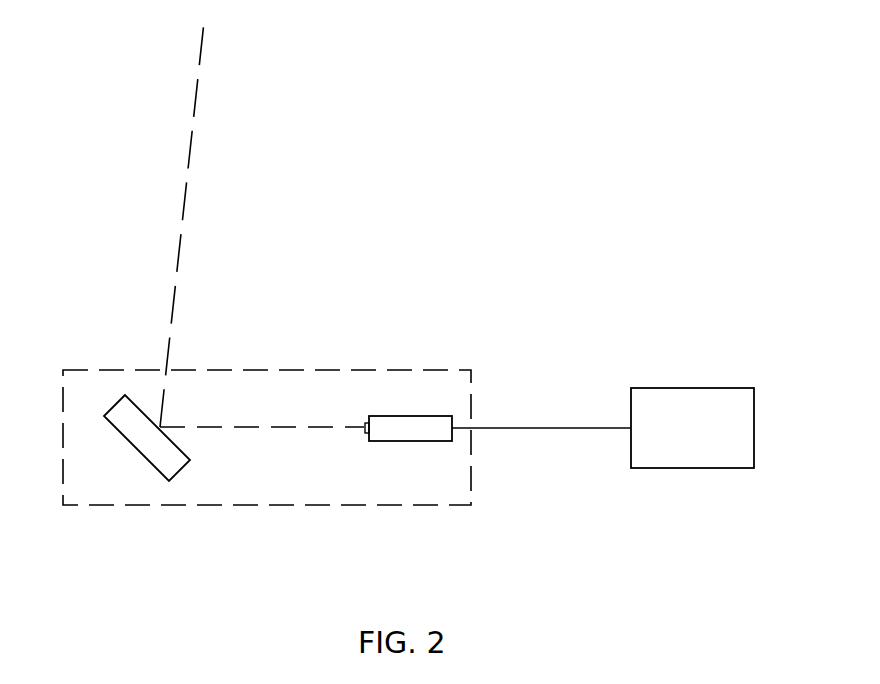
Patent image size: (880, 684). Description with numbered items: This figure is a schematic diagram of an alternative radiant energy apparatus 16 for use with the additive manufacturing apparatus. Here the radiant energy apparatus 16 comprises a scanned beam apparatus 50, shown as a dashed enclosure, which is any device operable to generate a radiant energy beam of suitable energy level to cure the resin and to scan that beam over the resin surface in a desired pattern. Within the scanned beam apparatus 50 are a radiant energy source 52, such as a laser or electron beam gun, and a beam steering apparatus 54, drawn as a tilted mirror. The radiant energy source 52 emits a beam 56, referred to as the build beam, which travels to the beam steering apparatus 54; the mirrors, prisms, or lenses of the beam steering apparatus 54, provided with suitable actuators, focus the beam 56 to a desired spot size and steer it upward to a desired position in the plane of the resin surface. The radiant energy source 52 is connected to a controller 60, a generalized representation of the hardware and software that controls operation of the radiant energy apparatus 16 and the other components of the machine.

The radiant energy apparatus 16 is at (106, 241).
The scanned beam apparatus 50 is at (199, 506).
The radiant energy source 52 is at (384, 422).
The beam steering apparatus 54 is at (157, 458).
The beam 56 is at (193, 130).
The controller 60 is at (705, 443).